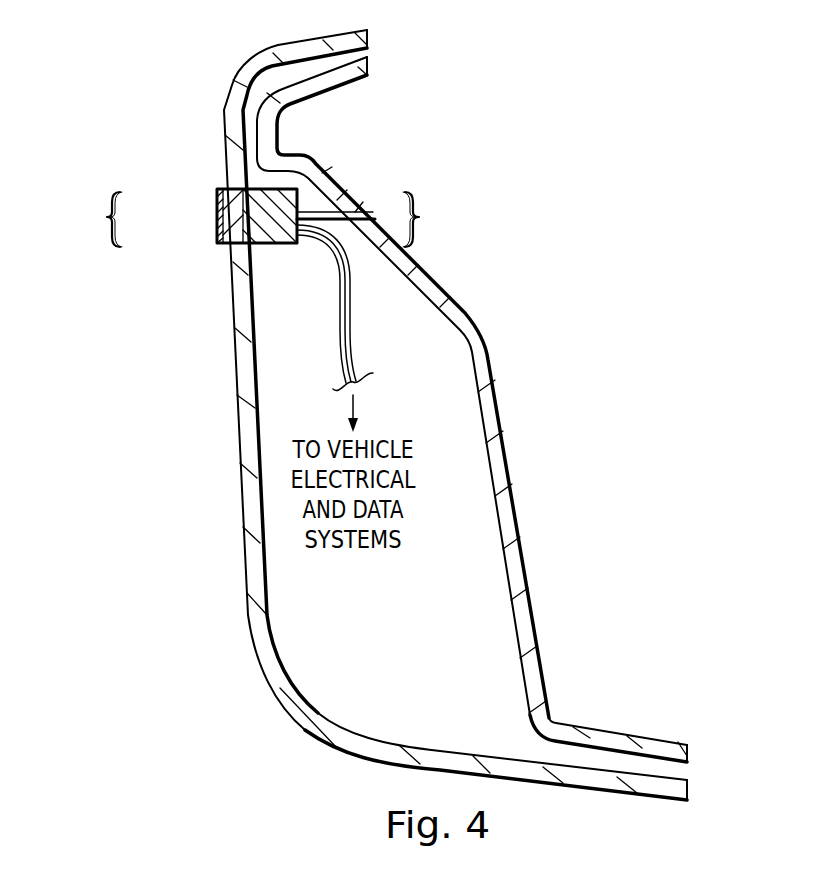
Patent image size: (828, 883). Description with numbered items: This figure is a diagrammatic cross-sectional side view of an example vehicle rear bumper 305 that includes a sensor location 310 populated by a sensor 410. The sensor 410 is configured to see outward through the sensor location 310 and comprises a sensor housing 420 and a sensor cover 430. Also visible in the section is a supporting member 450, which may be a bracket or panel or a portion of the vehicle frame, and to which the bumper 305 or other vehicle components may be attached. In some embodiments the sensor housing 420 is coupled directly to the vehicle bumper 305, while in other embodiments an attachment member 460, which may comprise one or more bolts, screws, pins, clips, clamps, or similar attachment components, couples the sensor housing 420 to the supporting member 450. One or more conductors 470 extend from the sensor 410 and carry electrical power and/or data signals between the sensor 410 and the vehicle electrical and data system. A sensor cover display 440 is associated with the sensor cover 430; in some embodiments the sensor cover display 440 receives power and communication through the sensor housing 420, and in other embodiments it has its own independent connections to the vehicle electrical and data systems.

The vehicle rear bumper 305 is at (302, 725).
The sensor location 310 is at (88, 219).
The sensor 410 is at (437, 219).
The sensor housing 420 is at (270, 244).
The sensor cover 430 is at (224, 255).
The sensor cover display 440 is at (218, 215).
The supporting member 450 is at (523, 342).
The attachment member 460 is at (322, 210).
The conductors 470 is at (351, 338).